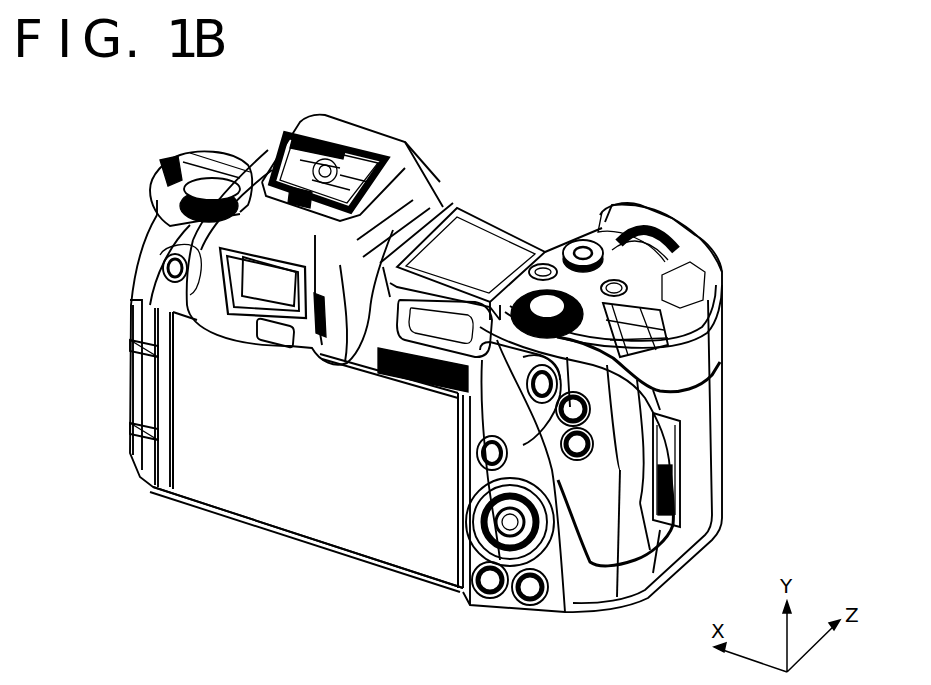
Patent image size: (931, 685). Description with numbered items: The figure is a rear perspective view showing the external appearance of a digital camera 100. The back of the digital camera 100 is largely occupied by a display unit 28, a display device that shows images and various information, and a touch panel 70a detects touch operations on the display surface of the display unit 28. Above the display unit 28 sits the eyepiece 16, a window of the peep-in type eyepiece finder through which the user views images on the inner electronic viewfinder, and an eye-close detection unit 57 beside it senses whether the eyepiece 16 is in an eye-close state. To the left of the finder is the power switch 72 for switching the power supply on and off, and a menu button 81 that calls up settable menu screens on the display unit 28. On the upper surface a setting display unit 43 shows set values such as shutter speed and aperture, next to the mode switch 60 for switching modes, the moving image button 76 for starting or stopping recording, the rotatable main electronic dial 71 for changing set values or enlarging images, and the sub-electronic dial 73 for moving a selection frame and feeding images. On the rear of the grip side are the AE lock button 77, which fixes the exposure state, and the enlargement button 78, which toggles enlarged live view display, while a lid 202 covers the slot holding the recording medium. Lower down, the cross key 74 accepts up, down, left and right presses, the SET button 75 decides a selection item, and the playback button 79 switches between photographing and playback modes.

The digital camera 100 is at (700, 100).
The power switch 72 is at (213, 179).
The eyepiece 16 is at (262, 267).
The menu button 81 is at (170, 272).
The eye-close detection unit 57 is at (273, 337).
The setting display unit 43 is at (494, 243).
The mode switch 60 is at (545, 300).
The moving image button 76 is at (582, 252).
The main electronic dial 71 is at (625, 215).
The sub-electronic dial 73 is at (560, 300).
The AE lock button 77 is at (574, 409).
The enlargement button 78 is at (577, 444).
The lid 202 is at (654, 484).
The display unit 28 is at (308, 464).
The touch panel 70a is at (280, 510).
The SET button 75 is at (508, 523).
The playback button 79 is at (490, 582).
The cross (four-way) key 74 is at (552, 545).